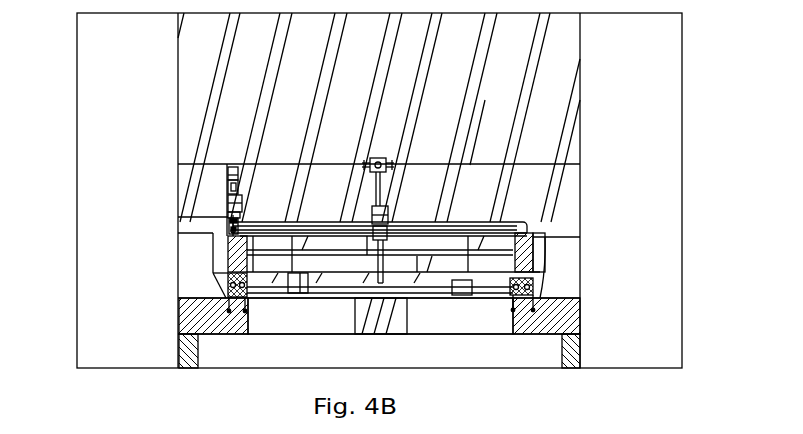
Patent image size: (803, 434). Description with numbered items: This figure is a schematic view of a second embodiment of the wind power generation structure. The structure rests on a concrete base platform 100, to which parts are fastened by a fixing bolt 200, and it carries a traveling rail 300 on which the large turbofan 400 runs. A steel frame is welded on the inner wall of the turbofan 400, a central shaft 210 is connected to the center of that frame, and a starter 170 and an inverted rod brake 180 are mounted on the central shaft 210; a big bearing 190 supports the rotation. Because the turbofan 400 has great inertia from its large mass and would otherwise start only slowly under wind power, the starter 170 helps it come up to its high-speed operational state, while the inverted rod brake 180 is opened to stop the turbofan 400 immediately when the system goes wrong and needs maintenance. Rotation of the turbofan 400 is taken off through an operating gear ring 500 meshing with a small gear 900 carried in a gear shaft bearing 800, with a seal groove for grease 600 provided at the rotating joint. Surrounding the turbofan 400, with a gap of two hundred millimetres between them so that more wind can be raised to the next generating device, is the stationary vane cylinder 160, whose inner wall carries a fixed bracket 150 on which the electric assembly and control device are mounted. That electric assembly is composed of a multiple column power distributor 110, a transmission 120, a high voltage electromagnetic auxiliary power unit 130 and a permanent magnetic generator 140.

The concrete base platform 100 is at (555, 327).
The fixing bolt 200 is at (545, 290).
The traveling rail 300 is at (575, 300).
The turbofan 400 is at (535, 290).
The operating gear ring 500 is at (522, 226).
The seal groove for grease 600 is at (537, 255).
The gear shaft bearing 800 is at (235, 240).
The small gear 900 is at (230, 228).
The multiple column power distributor 110 is at (228, 213).
The transmission 120 is at (228, 204).
The high voltage electromagnetic auxiliary power unit 130 is at (228, 183).
The permanent magnetic generator 140 is at (228, 172).
The fixed bracket 150 is at (572, 164).
The stationary vane cylinder 160 is at (457, 127).
The starter 170 is at (230, 165).
The inverted rod brake 180 is at (372, 212).
The big bearing 190 is at (372, 160).
The central shaft 210 is at (455, 165).